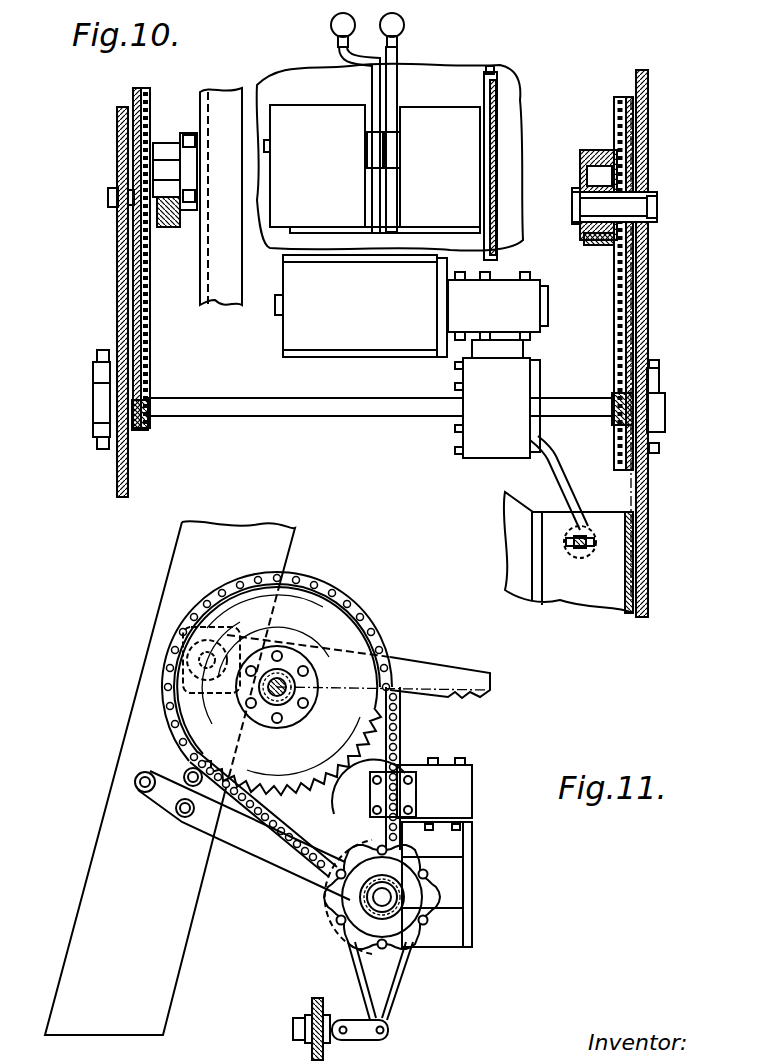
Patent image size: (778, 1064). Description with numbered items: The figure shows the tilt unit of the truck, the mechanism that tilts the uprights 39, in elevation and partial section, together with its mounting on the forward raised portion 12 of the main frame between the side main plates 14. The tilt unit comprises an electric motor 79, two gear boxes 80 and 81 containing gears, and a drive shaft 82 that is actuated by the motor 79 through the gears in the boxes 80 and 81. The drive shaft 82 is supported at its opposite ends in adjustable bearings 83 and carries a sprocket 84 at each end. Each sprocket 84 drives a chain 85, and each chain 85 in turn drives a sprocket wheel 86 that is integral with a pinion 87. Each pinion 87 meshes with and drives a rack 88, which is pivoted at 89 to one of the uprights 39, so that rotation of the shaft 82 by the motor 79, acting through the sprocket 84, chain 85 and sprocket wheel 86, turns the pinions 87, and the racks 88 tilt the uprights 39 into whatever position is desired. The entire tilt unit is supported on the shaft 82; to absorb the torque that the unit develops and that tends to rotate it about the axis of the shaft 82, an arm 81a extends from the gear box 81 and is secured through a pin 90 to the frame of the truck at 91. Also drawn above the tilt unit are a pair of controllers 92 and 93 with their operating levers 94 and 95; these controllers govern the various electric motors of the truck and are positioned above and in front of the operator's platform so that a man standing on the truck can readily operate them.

In FIG. 10, the forward raised portion 12 is at (662, 132).
In FIG. 10, the side main plates 14 is at (646, 503).
In FIG. 11, the side main plates 14 is at (425, 935).
In FIG. 10, the uprights 39 is at (214, 306).
In FIG. 11, the uprights 39 is at (175, 567).
In FIG. 10, the electric motor 79 is at (357, 345).
In FIG. 11, the electric motor 79 is at (430, 754).
In FIG. 10, the gear box 80 is at (536, 306).
In FIG. 11, the gear box 80 is at (455, 800).
In FIG. 10, the gear box 81 is at (470, 435).
In FIG. 11, the gear box 81 is at (455, 845).
In FIG. 10, the arm 81a is at (545, 462).
In FIG. 11, the arm 81a is at (395, 975).
In FIG. 10, the drive shaft 82 is at (233, 416).
In FIG. 11, the drive shaft 82 is at (342, 935).
In FIG. 10, the adjustable bearings 83 is at (94, 366).
In FIG. 11, the adjustable bearings 83 is at (368, 868).
In FIG. 10, the sprocket 84 is at (138, 428).
In FIG. 11, the sprocket 84 is at (325, 918).
In FIG. 10, the chain 85 is at (150, 338).
In FIG. 11, the chain 85 is at (398, 718).
In FIG. 10, the sprocket wheel 86 is at (141, 265).
In FIG. 11, the sprocket wheel 86 is at (255, 822).
In FIG. 10, the pinion 87 is at (165, 228).
In FIG. 11, the pinion 87 is at (318, 696).
In FIG. 10, the rack 88 is at (583, 172).
In FIG. 11, the rack 88 is at (425, 672).
In FIG. 10, the pivot 89 is at (152, 165).
In FIG. 11, the pivot 89 is at (182, 653).
In FIG. 10, the pin 90 is at (577, 556).
In FIG. 11, the pin 90 is at (313, 1010).
In FIG. 10, the frame attachment point 91 is at (592, 552).
In FIG. 11, the frame attachment point 91 is at (308, 1040).
In FIG. 10, the controller 92 is at (305, 112).
In FIG. 10, the controller 93 is at (450, 100).
In FIG. 10, the operating lever 94 is at (338, 41).
In FIG. 10, the operating lever 95 is at (397, 50).